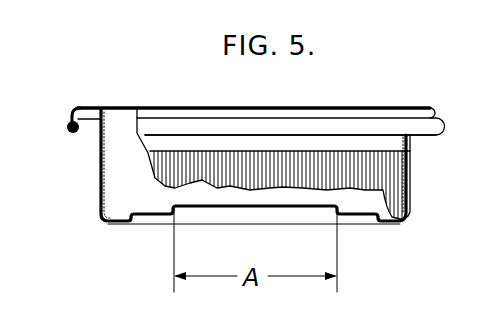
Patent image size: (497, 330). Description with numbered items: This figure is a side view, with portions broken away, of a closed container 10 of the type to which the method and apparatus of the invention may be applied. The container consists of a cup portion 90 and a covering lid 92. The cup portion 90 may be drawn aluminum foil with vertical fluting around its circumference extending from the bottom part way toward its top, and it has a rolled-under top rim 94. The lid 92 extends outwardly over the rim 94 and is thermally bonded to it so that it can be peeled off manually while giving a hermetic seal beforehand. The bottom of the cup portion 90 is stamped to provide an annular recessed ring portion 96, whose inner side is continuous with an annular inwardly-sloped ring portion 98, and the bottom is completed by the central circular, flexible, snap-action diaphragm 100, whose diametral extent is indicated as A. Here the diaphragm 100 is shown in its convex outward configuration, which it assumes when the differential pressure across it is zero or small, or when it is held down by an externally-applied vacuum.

The container assembly 10 is at (385, 106).
The cup portion 90 is at (100, 178).
The covering lid 92 is at (322, 106).
The rolled-under top rim 94 is at (67, 127).
The annular recessed ring portion 96 is at (360, 219).
The annular inwardly-sloped ring portion 98 is at (176, 223).
The snap-action diaphragm 100 is at (285, 218).